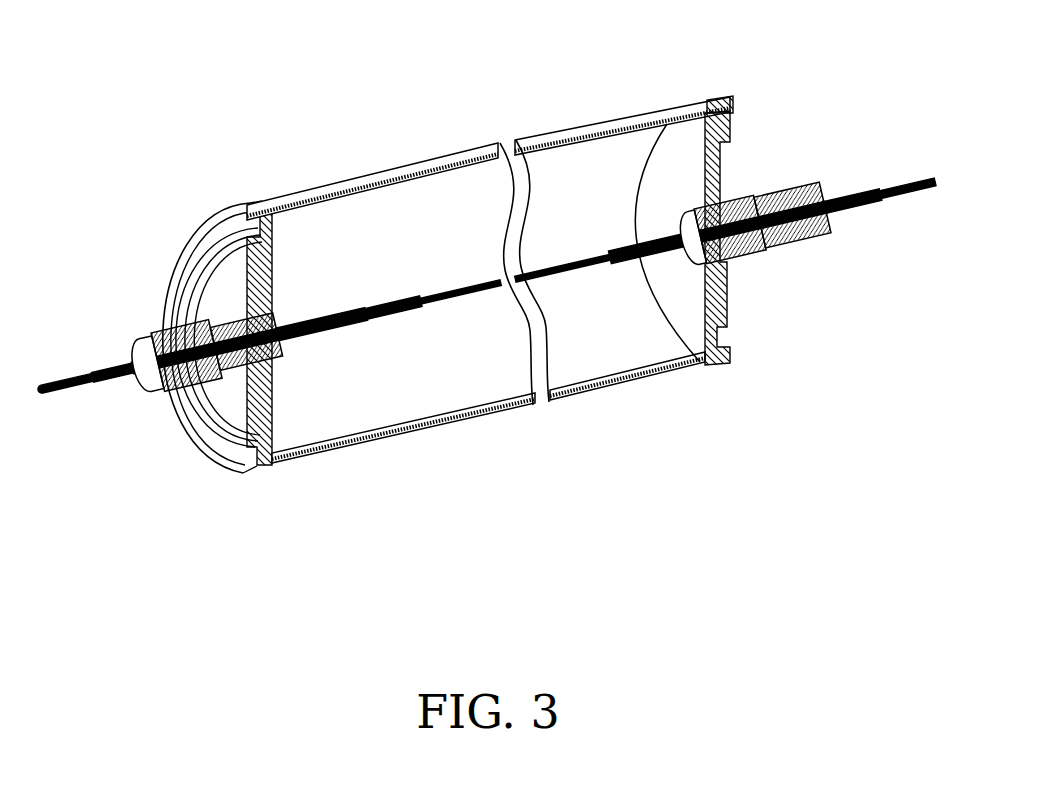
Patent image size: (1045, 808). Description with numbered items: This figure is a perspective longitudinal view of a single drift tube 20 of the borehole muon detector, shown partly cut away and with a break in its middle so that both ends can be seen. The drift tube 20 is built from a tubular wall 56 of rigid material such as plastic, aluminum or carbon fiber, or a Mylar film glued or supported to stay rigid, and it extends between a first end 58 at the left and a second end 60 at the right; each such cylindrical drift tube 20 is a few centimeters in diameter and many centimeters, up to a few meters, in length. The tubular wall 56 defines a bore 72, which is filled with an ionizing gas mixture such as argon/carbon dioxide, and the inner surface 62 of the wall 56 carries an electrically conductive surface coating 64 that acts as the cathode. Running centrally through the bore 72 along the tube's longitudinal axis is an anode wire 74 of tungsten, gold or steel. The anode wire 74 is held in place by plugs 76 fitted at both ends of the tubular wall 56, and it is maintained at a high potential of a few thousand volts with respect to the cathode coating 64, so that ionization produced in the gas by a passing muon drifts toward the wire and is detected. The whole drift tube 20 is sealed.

The drift tube 20 is at (486, 258).
The tubular wall 56 is at (488, 303).
The first end 58 is at (232, 398).
The second end 60 is at (734, 153).
The inner surface 62 is at (341, 452).
The electrically conductive surface coating 64 is at (429, 431).
The bore 72 is at (487, 347).
The anode wire 74 is at (486, 262).
The plug 76 is at (173, 256).